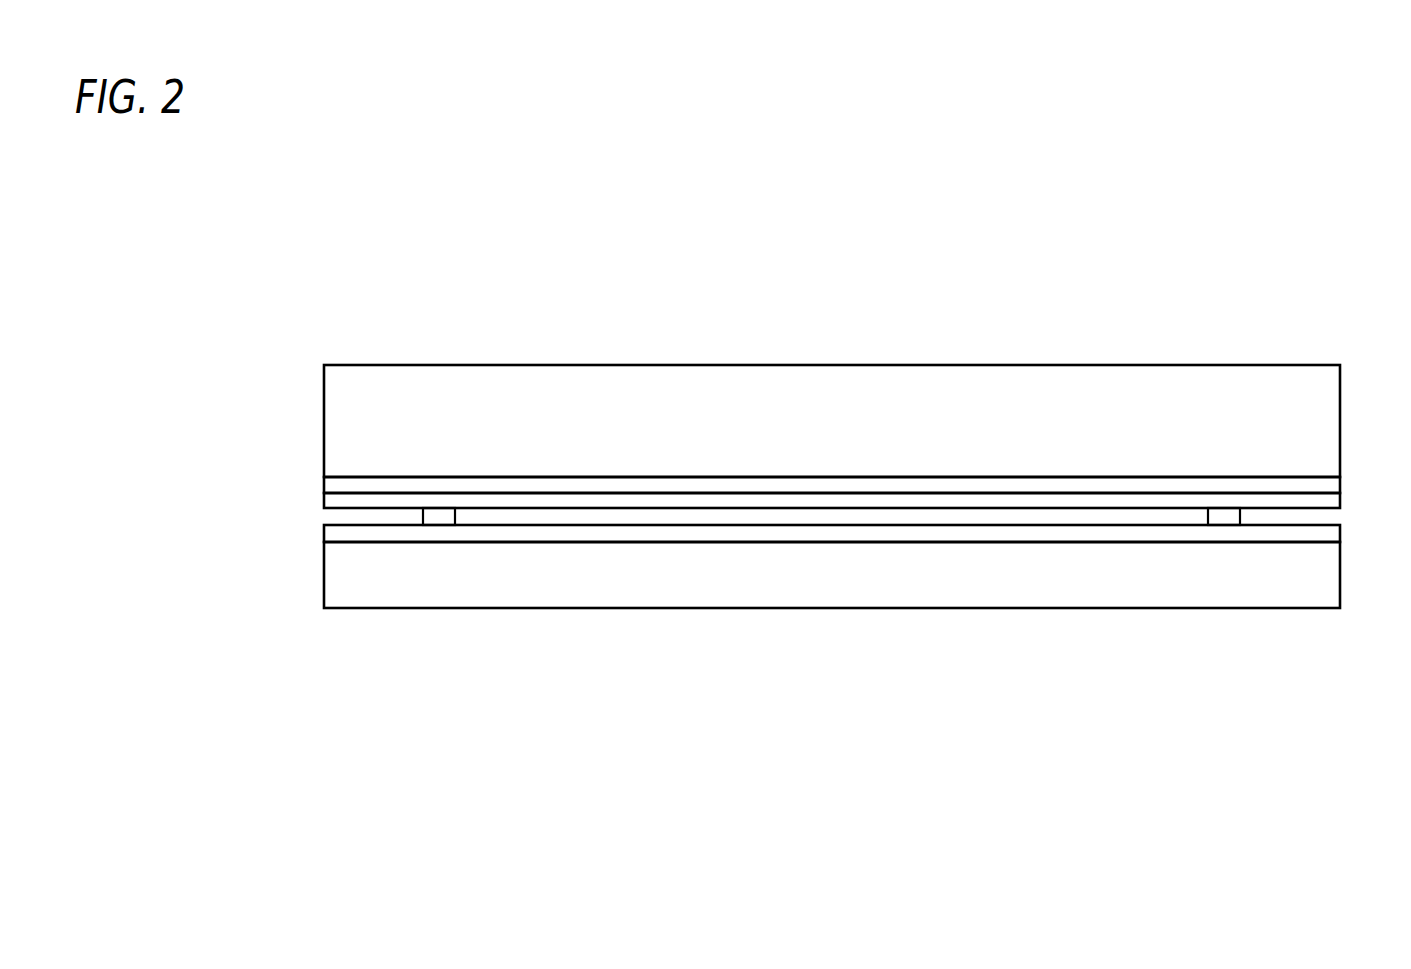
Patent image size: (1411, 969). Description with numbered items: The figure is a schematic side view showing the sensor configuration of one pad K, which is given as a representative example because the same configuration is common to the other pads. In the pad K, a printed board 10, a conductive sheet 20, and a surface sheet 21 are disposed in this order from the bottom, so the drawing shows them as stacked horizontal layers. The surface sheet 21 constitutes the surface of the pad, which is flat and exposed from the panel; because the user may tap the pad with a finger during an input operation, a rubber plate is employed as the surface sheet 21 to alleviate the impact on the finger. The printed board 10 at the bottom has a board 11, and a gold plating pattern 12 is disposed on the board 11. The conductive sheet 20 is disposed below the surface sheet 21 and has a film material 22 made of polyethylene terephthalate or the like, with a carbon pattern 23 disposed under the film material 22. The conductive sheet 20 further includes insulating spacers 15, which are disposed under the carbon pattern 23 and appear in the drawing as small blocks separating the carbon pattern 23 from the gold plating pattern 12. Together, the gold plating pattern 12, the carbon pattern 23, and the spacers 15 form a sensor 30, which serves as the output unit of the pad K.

The pad K is at (913, 307).
The printed board 10 is at (235, 547).
The board 11 is at (324, 577).
The gold plating pattern 12 is at (324, 533).
The insulating spacers 15 is at (423, 520).
The conductive sheet 20 is at (235, 428).
The surface sheet 21 is at (324, 408).
The film material 22 is at (324, 483).
The carbon pattern 23 is at (324, 502).
The sensor 30 is at (1346, 493).